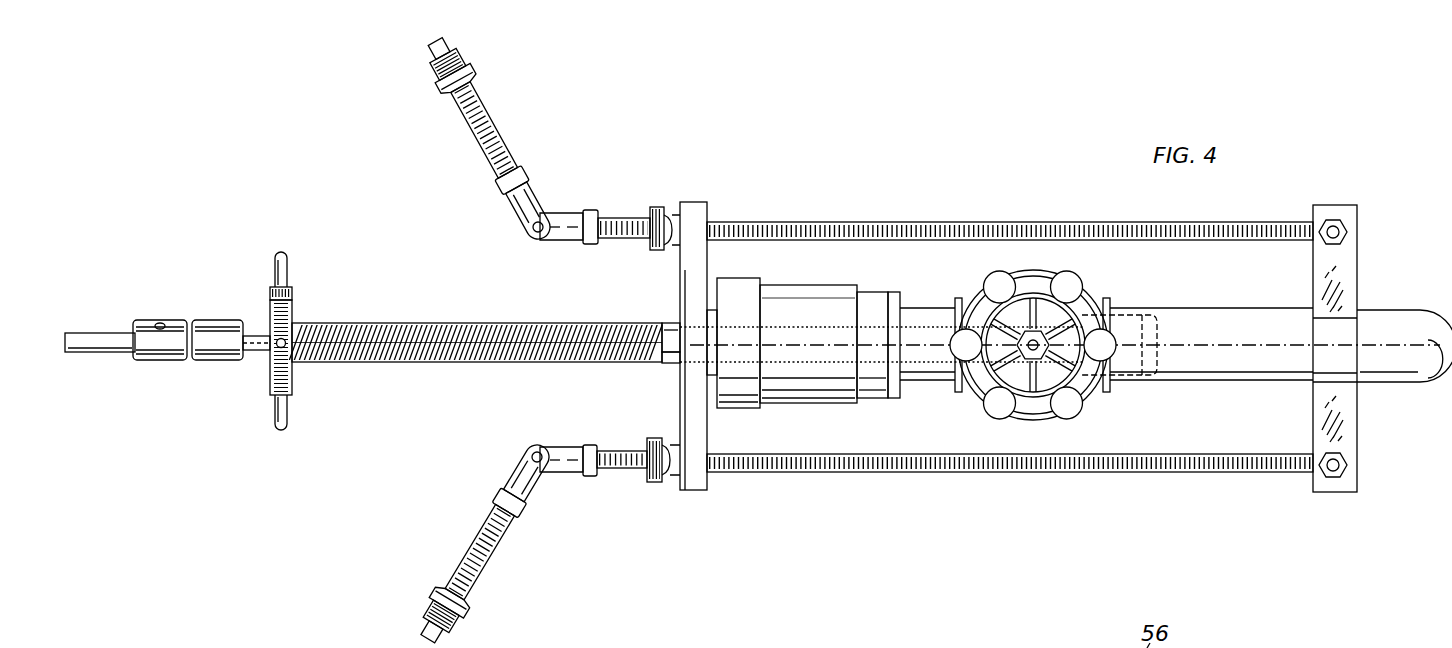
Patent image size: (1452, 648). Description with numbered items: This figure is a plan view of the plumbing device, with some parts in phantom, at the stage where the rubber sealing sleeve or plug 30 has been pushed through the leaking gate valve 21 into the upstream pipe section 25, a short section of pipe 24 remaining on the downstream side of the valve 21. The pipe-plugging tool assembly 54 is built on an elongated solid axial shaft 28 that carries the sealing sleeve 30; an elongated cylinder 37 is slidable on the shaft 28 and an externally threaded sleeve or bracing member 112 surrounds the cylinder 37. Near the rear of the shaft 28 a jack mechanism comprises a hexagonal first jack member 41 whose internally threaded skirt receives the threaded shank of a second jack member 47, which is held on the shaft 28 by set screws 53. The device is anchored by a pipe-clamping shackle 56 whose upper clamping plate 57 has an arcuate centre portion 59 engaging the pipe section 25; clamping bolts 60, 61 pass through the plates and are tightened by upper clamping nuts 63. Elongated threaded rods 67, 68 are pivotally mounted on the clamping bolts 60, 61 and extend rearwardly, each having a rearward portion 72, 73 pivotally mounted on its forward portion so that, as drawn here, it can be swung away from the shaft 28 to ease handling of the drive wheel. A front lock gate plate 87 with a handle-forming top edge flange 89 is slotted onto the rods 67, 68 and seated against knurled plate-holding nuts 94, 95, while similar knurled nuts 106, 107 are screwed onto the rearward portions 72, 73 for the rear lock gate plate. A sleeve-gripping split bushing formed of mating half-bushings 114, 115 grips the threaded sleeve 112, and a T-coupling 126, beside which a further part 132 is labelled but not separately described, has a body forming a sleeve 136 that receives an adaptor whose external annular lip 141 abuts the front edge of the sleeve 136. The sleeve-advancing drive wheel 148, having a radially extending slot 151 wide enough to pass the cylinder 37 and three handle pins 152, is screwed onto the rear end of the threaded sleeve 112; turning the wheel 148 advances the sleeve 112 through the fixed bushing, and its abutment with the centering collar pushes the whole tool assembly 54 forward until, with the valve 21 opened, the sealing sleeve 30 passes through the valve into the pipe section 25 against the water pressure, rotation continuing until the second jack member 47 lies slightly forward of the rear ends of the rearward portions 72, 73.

The gate valve 21 is at (1086, 258).
The short section of pipe 24 is at (932, 368).
The pipe section 25 is at (1188, 372).
The axial shaft 28 is at (88, 333).
The sealing sleeve 30 is at (1106, 324).
The elongated cylinder 37 is at (259, 351).
The first jack member 41 is at (218, 316).
The second jack member 47 is at (170, 364).
The set screws 53 is at (163, 324).
The pipe-plugging tool assembly 54 is at (431, 367).
The pipe-clamping shackle 56 is at (1310, 364).
The upper clamping plate 57 is at (1346, 413).
The arcuate centre portion 59 is at (1346, 318).
The clamping bolt 60 is at (1336, 472).
The clamping bolt 61 is at (1337, 227).
The upper clamping nuts 63 is at (1349, 233).
The elongated threaded rod 67 is at (941, 472).
The elongated threaded rod 68 is at (938, 223).
The rearward portion 72 is at (484, 540).
The rearward portion 73 is at (486, 140).
The front lock gate plate 87 is at (716, 434).
The top edge flange 89 is at (700, 206).
The knurled plate-holding nut 94 is at (655, 484).
The knurled plate-holding nut 95 is at (657, 206).
The knurled plate-holding nut 106 is at (454, 626).
The knurled plate-holding nut 107 is at (458, 62).
The threaded sleeve 112 is at (401, 322).
The half-bushing 114 is at (668, 322).
The half-bushing 115 is at (668, 360).
The T-coupling 126 is at (797, 272).
The connector 132 is at (719, 368).
The sleeve 136 is at (876, 296).
The external annular lip 141 is at (895, 300).
The sleeve-advancing drive wheel 148 is at (301, 382).
The radially extending slot 151 is at (288, 298).
The handle pins 152 is at (286, 264).